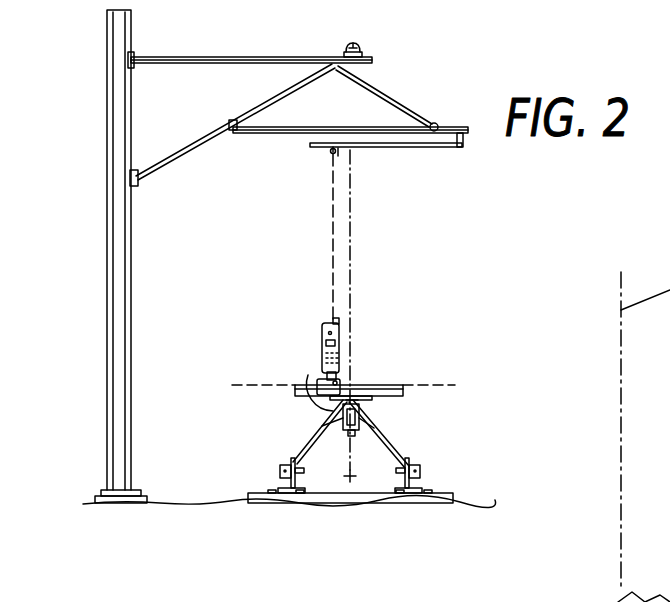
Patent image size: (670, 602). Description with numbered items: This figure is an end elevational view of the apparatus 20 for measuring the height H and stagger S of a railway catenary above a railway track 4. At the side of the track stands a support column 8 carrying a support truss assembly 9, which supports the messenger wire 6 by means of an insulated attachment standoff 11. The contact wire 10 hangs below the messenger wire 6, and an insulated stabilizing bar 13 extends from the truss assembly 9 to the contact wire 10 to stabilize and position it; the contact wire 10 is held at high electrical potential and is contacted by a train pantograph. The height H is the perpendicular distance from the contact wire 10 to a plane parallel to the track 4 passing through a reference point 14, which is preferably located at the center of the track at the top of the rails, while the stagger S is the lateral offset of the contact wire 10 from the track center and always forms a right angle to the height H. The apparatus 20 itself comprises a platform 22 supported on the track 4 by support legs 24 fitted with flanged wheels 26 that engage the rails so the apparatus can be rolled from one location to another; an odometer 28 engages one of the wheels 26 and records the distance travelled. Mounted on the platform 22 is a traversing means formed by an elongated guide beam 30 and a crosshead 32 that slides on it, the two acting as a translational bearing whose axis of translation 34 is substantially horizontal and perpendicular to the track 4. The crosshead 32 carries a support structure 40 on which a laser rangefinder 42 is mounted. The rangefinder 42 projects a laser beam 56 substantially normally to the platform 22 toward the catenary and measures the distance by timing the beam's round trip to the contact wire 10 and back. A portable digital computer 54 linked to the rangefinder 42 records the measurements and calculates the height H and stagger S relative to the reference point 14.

The railway track 4 is at (488, 487).
The messenger wire 6 is at (351, 45).
The support column 8 is at (107, 232).
The support truss assembly 9 is at (234, 57).
The contact wire 10 is at (330, 154).
The insulated attachment standoff 11 is at (360, 46).
The insulated stabilizing bar 13 is at (393, 141).
The reference point 14 is at (355, 479).
The apparatus 20 is at (574, 386).
The platform 22 is at (388, 404).
The support legs 24 is at (320, 444).
The flanged wheels 26 is at (417, 461).
The odometer 28 is at (300, 478).
The guide beam 30 is at (402, 394).
The crosshead 32 is at (308, 391).
The axis of translation 34 is at (236, 385).
The support structure 40 is at (317, 381).
The laser rangefinder 42 is at (322, 322).
The portable digital computer 54 is at (356, 396).
The laser beam 56 is at (330, 220).
The stagger S is at (338, 152).
The height H is at (352, 245).